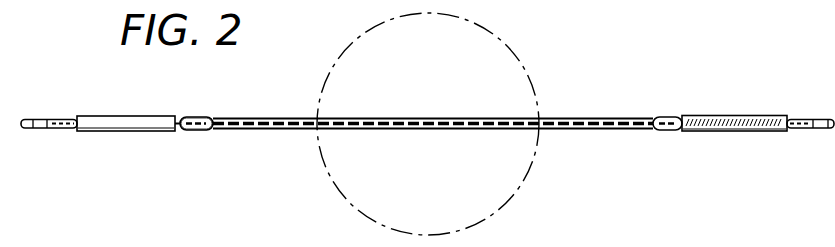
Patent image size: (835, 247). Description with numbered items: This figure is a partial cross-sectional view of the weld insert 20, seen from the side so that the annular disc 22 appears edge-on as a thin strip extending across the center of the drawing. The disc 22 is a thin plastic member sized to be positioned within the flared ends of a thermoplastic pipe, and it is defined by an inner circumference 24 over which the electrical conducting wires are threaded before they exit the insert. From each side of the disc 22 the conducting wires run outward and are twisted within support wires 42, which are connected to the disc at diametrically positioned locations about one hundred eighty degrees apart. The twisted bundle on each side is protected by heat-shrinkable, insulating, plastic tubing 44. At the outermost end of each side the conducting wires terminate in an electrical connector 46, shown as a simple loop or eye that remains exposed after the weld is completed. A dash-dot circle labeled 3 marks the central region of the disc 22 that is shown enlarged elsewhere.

The detail region shown in FIG. 3 is at (510, 202).
The weld insert 20 is at (433, 93).
The annular disc 22 is at (200, 131).
The inner circumference 24 is at (392, 118).
The support wire 42 is at (197, 120).
The heat-shrinkable insulating plastic tubing 44 is at (162, 130).
The electrical connector 46 is at (38, 117).